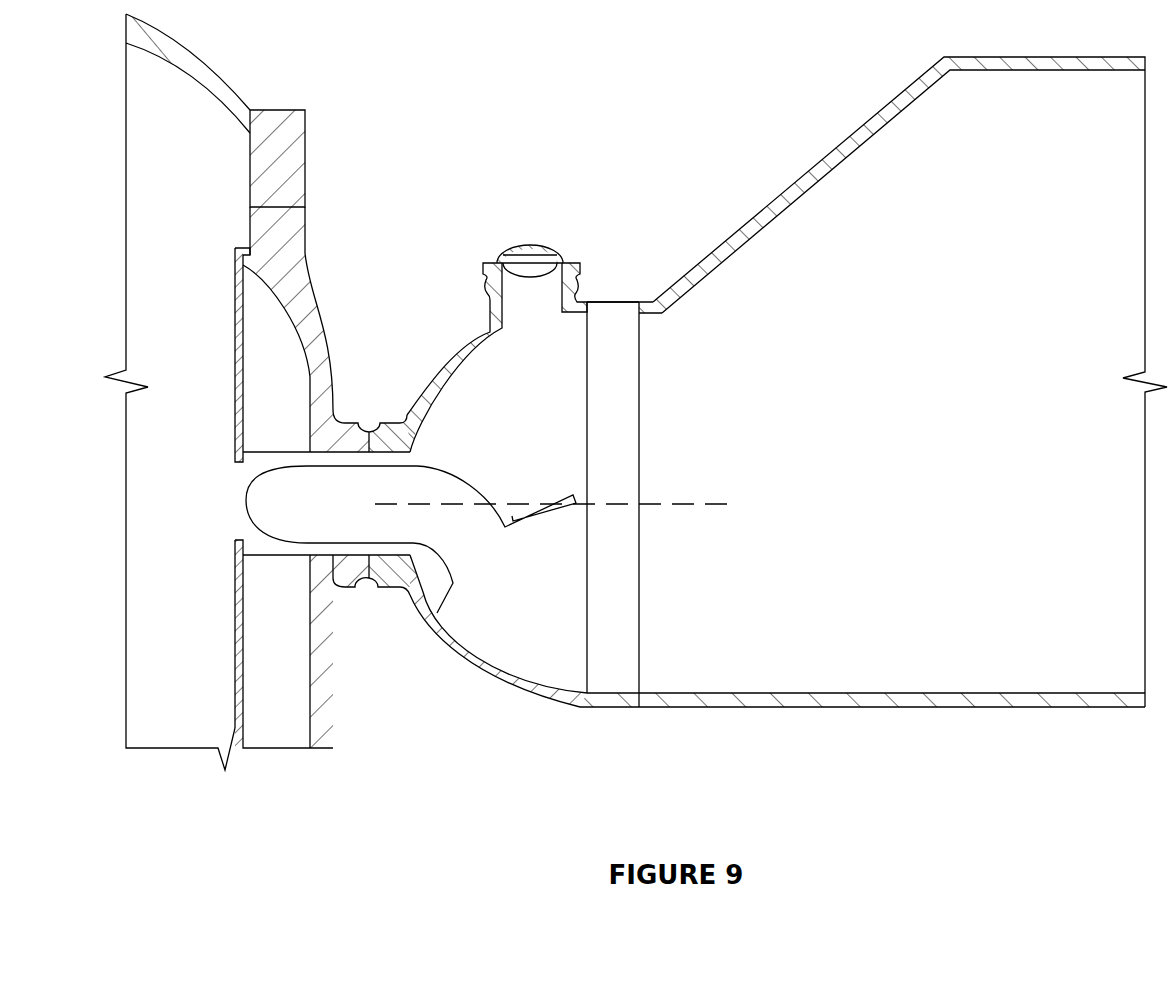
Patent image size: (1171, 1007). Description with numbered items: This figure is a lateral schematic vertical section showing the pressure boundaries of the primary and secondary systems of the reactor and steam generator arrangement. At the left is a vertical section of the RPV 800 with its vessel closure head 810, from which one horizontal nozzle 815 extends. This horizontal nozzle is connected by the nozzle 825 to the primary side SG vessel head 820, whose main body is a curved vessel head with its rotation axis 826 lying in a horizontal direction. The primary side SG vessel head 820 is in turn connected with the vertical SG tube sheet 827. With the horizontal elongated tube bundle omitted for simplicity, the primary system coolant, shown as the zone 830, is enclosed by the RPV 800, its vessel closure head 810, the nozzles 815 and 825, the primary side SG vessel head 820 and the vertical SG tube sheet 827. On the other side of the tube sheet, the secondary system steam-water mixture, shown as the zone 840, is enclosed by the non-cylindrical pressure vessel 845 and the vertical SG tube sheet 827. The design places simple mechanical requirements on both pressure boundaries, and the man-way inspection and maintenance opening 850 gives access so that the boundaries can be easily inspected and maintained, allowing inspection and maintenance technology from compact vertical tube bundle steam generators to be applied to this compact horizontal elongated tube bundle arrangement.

The RPV 800 is at (290, 245).
The vessel closure head 810 is at (270, 135).
The horizontal nozzle 815 is at (347, 433).
The primary side SG vessel head 820 is at (498, 678).
The nozzle 825 is at (393, 578).
The rotation axis 826 is at (708, 505).
The vertical SG tube sheet 827 is at (612, 680).
The primary system coolant zone 830 is at (168, 722).
The secondary system steam-water mixture zone 840 is at (895, 662).
The non-cylindrical pressure vessel 845 is at (572, 268).
The man-way inspection and maintenance opening 850 is at (773, 200).